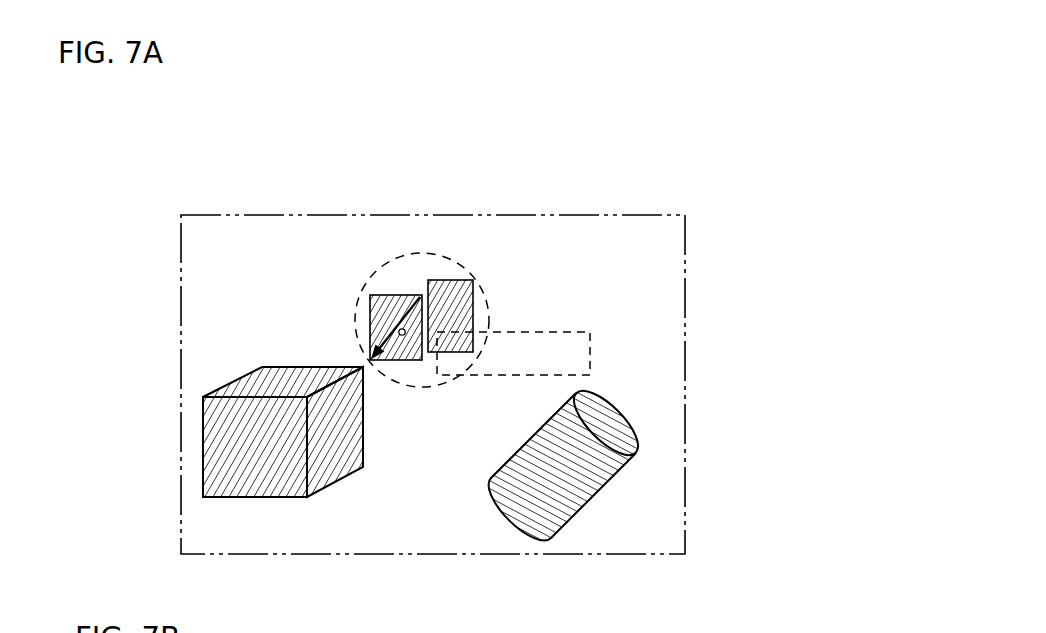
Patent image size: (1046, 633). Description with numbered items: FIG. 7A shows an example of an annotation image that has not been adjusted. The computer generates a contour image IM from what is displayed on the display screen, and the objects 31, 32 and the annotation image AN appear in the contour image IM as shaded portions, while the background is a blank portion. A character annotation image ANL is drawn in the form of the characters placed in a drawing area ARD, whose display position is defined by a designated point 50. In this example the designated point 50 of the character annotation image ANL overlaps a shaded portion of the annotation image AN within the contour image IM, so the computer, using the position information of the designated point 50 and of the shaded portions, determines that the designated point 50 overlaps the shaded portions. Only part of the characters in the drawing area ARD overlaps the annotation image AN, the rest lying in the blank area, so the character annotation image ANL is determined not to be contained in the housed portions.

The object 31 is at (236, 497).
The object 32 is at (543, 522).
The designated point 50 is at (402, 336).
The annotation image AN is at (370, 280).
The contour image IM is at (440, 215).
The character annotation image ANL is at (554, 333).
The drawing area ARD is at (590, 352).